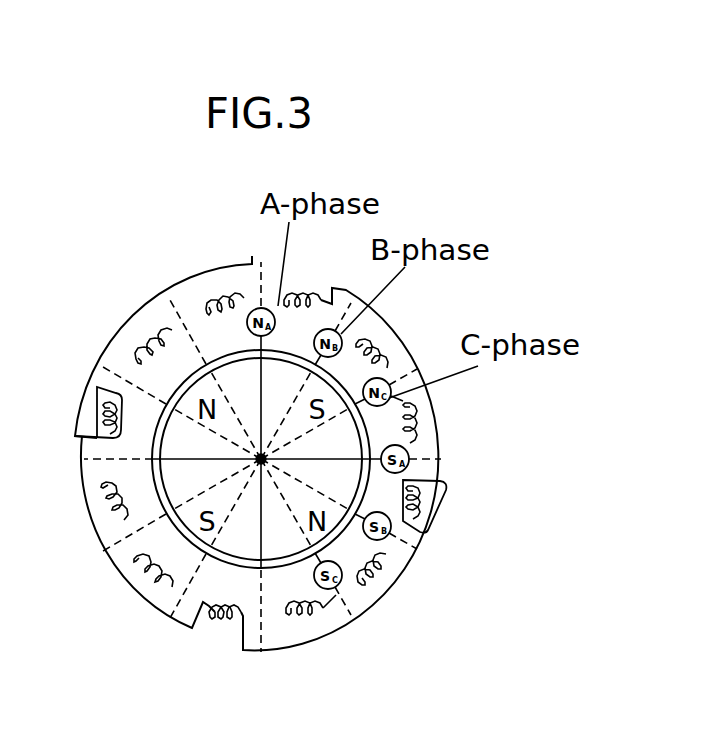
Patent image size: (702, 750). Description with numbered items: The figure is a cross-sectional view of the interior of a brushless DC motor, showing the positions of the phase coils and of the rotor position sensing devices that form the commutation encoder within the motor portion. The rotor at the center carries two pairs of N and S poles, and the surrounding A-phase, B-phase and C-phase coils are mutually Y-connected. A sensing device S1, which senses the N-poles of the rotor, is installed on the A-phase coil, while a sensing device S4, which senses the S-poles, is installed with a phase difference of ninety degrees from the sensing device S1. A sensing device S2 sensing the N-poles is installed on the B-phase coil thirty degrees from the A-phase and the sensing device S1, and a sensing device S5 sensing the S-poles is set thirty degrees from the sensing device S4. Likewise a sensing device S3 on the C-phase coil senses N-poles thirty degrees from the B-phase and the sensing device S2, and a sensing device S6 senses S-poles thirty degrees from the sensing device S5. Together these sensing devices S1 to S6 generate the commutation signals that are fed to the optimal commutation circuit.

The sensing device S1 is at (279, 306).
The sensing device S2 is at (346, 334).
The sensing device S3 is at (404, 400).
The sensing device S4 is at (409, 462).
The sensing device S5 is at (388, 537).
The sensing device S6 is at (338, 588).